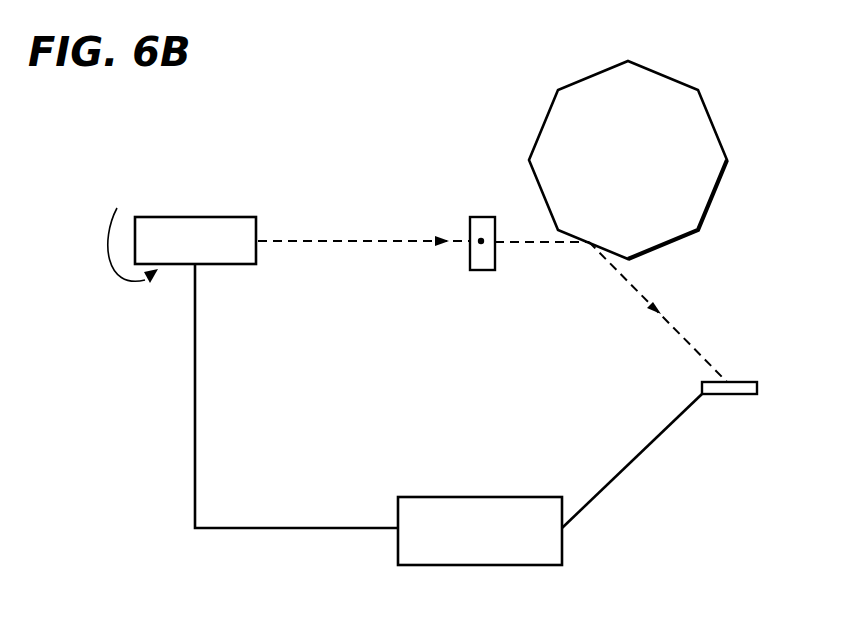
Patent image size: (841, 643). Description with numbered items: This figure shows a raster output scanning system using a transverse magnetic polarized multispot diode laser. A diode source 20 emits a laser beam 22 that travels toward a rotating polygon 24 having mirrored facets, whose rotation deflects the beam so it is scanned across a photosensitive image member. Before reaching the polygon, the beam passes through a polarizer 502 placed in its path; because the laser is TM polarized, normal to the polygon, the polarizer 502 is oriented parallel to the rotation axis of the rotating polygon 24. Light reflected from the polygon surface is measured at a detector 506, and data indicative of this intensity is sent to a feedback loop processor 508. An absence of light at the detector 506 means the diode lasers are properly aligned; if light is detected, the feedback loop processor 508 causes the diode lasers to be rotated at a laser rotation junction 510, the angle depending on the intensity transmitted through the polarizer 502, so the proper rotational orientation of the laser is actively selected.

The diode source 20 is at (195, 217).
The laser beam 22 is at (335, 243).
The rotating polygon 24 is at (700, 202).
The polarizer 502 is at (477, 217).
The detector 506 is at (722, 394).
The feedback loop processor 508 is at (517, 497).
The laser rotation junction 510 is at (110, 263).